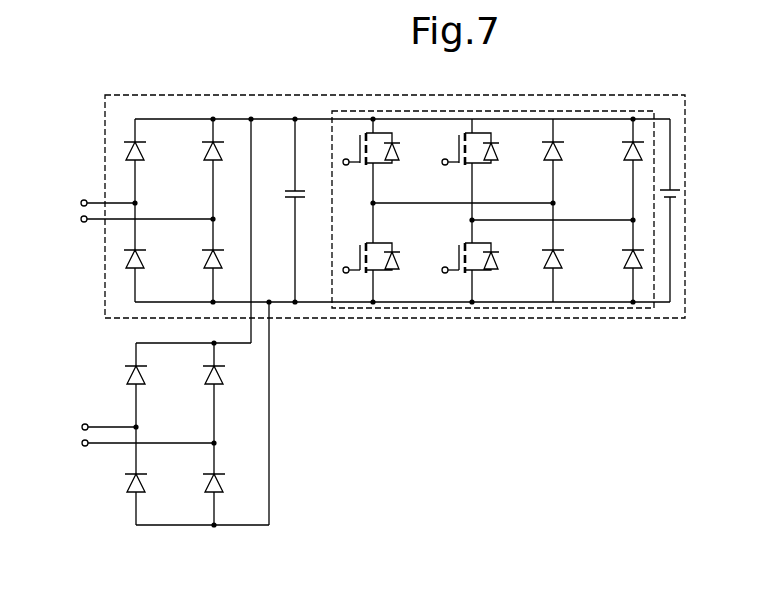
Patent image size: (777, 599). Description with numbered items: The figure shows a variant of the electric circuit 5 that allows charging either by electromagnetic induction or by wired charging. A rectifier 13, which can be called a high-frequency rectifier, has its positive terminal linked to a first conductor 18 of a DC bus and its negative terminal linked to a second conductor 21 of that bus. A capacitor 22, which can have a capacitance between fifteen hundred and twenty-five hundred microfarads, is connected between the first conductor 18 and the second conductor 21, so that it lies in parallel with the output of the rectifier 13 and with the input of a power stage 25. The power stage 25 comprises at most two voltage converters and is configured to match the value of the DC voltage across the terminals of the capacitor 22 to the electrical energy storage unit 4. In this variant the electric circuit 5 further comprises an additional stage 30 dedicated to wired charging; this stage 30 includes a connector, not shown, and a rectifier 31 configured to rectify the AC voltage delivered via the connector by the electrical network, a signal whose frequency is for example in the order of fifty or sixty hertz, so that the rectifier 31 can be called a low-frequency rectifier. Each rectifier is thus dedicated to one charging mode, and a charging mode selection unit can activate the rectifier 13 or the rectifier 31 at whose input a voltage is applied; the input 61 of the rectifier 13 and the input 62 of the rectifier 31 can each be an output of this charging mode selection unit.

The electric circuit 5 is at (598, 78).
The rectifier 13 is at (135, 113).
The first conductor 18 is at (252, 119).
The capacitor 22 is at (300, 189).
The second conductor 21 is at (320, 302).
The power stage 25 is at (509, 318).
The electrical energy storage unit 4 is at (672, 189).
The input of the rectifier 61 is at (94, 199).
The input of the rectifier 62 is at (85, 423).
The additional stage 30 is at (239, 462).
The rectifier 31 is at (136, 537).